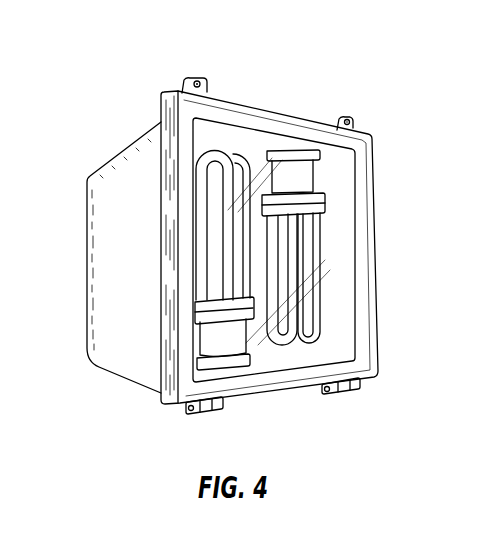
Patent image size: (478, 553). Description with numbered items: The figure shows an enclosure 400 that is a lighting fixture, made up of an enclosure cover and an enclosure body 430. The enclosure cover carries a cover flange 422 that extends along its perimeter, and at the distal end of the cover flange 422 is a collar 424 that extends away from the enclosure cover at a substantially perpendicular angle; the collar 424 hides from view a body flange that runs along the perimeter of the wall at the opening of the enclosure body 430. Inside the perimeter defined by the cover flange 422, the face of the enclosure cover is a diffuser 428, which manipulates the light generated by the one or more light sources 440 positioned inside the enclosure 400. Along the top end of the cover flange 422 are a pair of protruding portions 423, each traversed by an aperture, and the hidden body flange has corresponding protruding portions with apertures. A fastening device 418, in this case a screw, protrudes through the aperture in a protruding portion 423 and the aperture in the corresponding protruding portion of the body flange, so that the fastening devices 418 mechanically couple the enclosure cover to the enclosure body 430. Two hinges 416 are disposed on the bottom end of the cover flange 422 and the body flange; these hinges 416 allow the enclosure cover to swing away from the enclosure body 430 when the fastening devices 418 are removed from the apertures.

The enclosure 400 is at (110, 44).
The hinges 416 is at (205, 415).
The fastening device 418 is at (201, 86).
The cover flange 422 is at (373, 197).
The protruding portions 423 is at (182, 86).
The collar 424 is at (168, 395).
The diffuser 428 is at (340, 315).
The enclosure body 430 is at (118, 160).
The light sources 440 is at (207, 261).